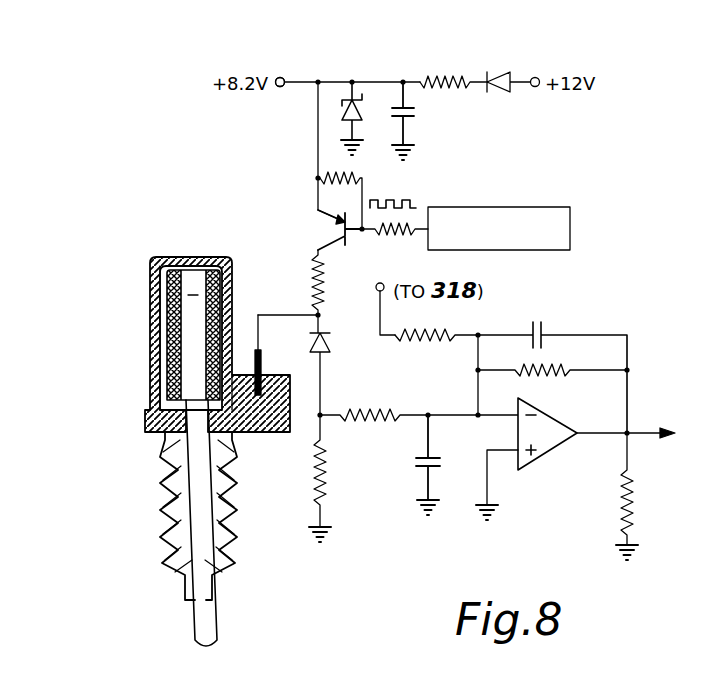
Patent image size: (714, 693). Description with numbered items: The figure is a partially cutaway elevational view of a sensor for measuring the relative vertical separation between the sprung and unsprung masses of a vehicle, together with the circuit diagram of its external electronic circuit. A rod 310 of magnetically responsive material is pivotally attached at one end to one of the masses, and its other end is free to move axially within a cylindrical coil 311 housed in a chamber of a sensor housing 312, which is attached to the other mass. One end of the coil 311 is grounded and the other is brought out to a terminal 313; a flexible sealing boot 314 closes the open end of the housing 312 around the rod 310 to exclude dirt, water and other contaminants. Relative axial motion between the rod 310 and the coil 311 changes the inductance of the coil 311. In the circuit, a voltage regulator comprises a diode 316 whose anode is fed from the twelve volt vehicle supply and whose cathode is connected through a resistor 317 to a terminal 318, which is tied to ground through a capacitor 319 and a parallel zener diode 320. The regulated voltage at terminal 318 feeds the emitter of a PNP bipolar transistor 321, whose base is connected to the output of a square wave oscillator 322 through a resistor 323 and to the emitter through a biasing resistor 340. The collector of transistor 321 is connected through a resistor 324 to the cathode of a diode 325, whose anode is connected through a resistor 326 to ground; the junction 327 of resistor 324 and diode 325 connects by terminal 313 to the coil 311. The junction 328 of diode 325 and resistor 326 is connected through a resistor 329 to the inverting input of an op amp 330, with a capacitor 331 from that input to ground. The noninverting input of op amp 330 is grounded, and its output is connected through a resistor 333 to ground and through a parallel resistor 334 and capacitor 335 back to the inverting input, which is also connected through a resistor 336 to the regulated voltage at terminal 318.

The rod 310 is at (212, 622).
The coil 311 is at (172, 338).
The sensor housing 312 is at (178, 258).
The terminal 313 is at (256, 330).
The flexible sealing boot 314 is at (238, 530).
The diode 316 is at (500, 92).
The resistor 317 is at (440, 78).
The terminal 318 is at (280, 78).
The capacitor 319 is at (410, 116).
The zener diode 320 is at (342, 115).
The PNP bipolar transistor 321 is at (318, 215).
The square wave oscillator 322 is at (570, 214).
The resistor 323 is at (412, 236).
The resistor 324 is at (312, 290).
The diode 325 is at (332, 337).
The resistor 326 is at (315, 495).
The junction 327 is at (322, 318).
The junction 328 is at (324, 412).
The resistor 329 is at (350, 420).
The op amp 330 is at (552, 450).
The capacitor 331 is at (422, 470).
The resistor 333 is at (634, 500).
The resistor 334 is at (545, 378).
The capacitor 335 is at (542, 330).
The resistor 336 is at (458, 342).
The biasing resistor 340 is at (362, 176).